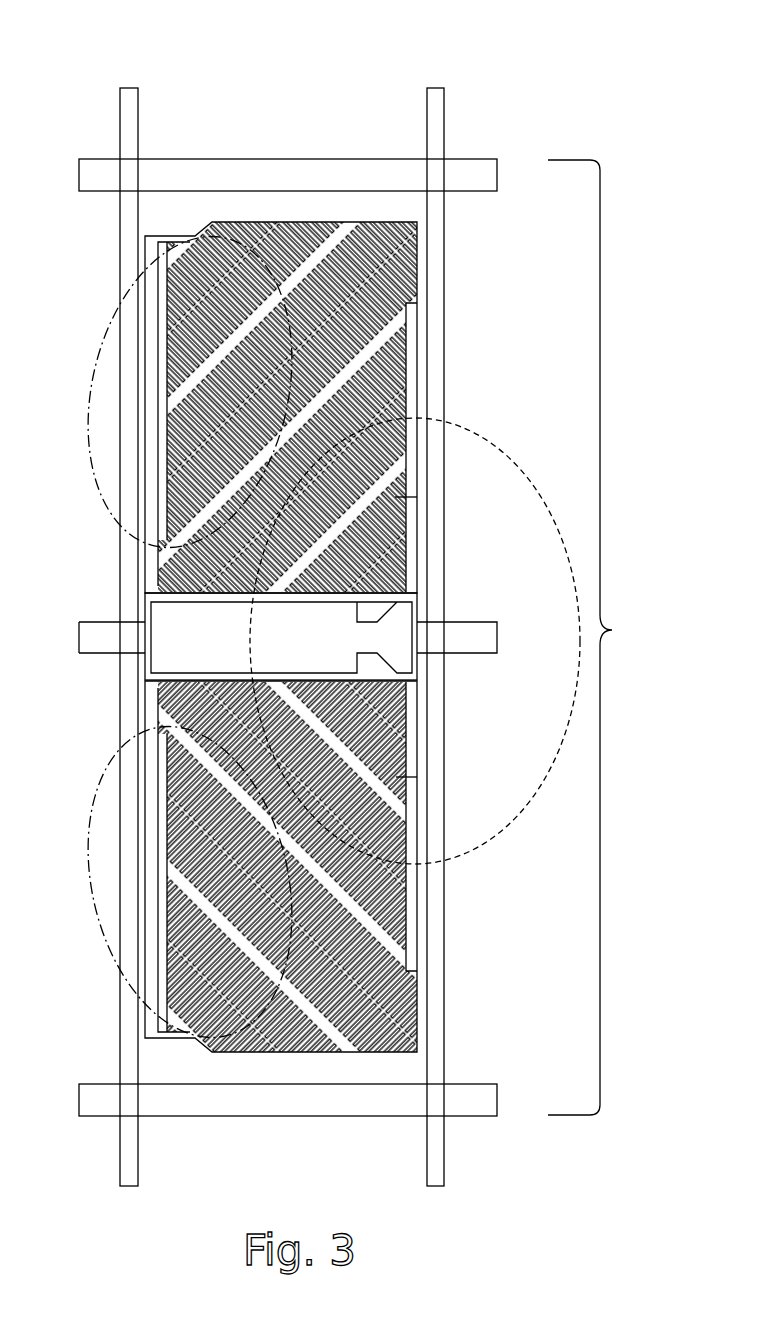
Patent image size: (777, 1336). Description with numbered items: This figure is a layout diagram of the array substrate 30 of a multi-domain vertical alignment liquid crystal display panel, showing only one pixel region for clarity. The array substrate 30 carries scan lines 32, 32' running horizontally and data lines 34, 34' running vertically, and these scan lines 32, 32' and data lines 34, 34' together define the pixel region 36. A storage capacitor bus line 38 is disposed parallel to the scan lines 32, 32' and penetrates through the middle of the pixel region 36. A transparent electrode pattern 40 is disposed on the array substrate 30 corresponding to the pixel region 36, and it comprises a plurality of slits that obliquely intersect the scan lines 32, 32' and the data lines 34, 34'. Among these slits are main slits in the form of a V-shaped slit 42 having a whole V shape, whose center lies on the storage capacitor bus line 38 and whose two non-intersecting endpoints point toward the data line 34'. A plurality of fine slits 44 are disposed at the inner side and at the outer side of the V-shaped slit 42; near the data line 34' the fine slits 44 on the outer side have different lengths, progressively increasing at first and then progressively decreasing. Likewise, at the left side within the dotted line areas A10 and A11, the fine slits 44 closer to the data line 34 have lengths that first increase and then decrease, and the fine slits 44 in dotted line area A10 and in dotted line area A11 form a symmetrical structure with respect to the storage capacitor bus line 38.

The array substrate 30 is at (566, 35).
The scan line 32 is at (288, 135).
The scan line 32' is at (288, 1136).
The data line 34 is at (128, 595).
The data line 34' is at (440, 595).
The pixel region 36 is at (612, 630).
The storage capacitor bus line 38 is at (100, 632).
The transparent electrode pattern 40 is at (333, 322).
The V-shaped slit 42 is at (396, 494).
The fine slit 44 is at (399, 777).
The dotted line area A10 is at (106, 362).
The dotted line area A11 is at (106, 750).